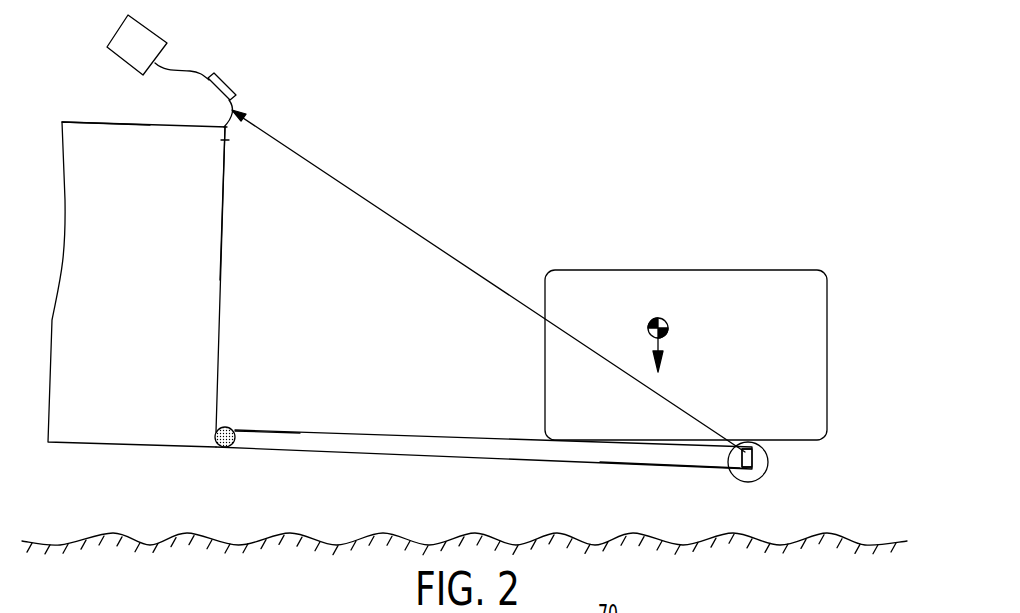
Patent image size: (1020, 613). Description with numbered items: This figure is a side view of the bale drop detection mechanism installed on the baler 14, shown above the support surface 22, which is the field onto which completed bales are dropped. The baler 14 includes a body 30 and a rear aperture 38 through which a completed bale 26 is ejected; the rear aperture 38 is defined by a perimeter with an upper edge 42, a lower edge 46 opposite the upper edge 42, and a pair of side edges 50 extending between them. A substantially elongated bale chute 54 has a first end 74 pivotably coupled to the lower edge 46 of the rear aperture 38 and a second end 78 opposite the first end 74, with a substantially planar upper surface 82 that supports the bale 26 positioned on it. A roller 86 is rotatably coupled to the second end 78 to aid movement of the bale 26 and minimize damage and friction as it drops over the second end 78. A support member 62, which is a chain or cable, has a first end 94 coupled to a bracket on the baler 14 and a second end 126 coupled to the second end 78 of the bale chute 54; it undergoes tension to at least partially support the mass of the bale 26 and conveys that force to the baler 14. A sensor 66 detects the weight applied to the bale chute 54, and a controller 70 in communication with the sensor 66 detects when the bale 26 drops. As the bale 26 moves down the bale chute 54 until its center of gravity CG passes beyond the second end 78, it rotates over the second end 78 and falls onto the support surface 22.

The baler 14 is at (100, 433).
The support surface 22 is at (872, 540).
The bale 26 is at (651, 270).
The body 30 is at (107, 150).
The rear aperture 38 is at (220, 320).
The upper edge 42 is at (233, 140).
The lower edge 46 is at (215, 430).
The side edges 50 is at (222, 240).
The bale chute 54 is at (448, 452).
The support member 62 is at (411, 229).
The sensor 66 is at (239, 82).
The controller 70 is at (107, 45).
The first end 74 is at (248, 442).
The second end 78 is at (672, 452).
The upper surface 82 is at (336, 415).
The roller 86 is at (768, 461).
The first end 94 is at (236, 122).
The second end 126 is at (753, 480).
The center of gravity CG is at (668, 330).